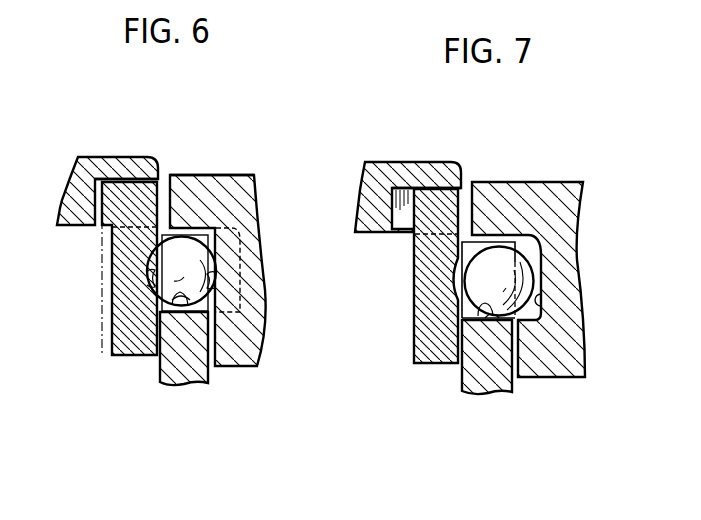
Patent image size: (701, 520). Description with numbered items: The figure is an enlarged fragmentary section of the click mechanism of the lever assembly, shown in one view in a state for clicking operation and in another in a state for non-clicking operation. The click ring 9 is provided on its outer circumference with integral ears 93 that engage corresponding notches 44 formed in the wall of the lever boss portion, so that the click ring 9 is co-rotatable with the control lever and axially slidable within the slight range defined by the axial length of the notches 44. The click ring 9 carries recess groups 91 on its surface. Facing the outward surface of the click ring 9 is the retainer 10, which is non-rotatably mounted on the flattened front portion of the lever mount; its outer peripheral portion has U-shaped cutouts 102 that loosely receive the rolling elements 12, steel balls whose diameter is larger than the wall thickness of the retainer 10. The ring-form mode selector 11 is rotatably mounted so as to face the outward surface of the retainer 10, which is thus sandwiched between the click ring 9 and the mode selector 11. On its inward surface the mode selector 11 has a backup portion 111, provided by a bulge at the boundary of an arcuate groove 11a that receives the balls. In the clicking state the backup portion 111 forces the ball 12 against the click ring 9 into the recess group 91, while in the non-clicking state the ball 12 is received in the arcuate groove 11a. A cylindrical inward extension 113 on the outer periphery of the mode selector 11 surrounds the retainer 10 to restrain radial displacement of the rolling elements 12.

In FIG. 6, the click ring 9 is at (112, 270).
In FIG. 7, the click ring 9 is at (422, 282).
In FIG. 6, the recess group 91 is at (153, 290).
In FIG. 7, the recess group 91 is at (462, 300).
In FIG. 6, the ears 93 is at (138, 180).
In FIG. 7, the ears 93 is at (440, 187).
In FIG. 6, the notches 44 is at (108, 192).
In FIG. 7, the notches 44 is at (413, 190).
In FIG. 6, the ring-form mode selector 11 is at (233, 185).
In FIG. 7, the ring-form mode selector 11 is at (510, 193).
In FIG. 6, the backup portion 111 is at (215, 297).
In FIG. 6, the cylindrical inward extension 113 is at (192, 188).
In FIG. 7, the arcuate groove 11a is at (542, 302).
In FIG. 6, the rolling element 12 is at (197, 257).
In FIG. 7, the rolling element 12 is at (525, 273).
In FIG. 6, the retainer 10 is at (155, 373).
In FIG. 7, the retainer 10 is at (467, 387).
In FIG. 6, the U-shaped cutout 102 is at (172, 296).
In FIG. 7, the U-shaped cutout 102 is at (492, 317).